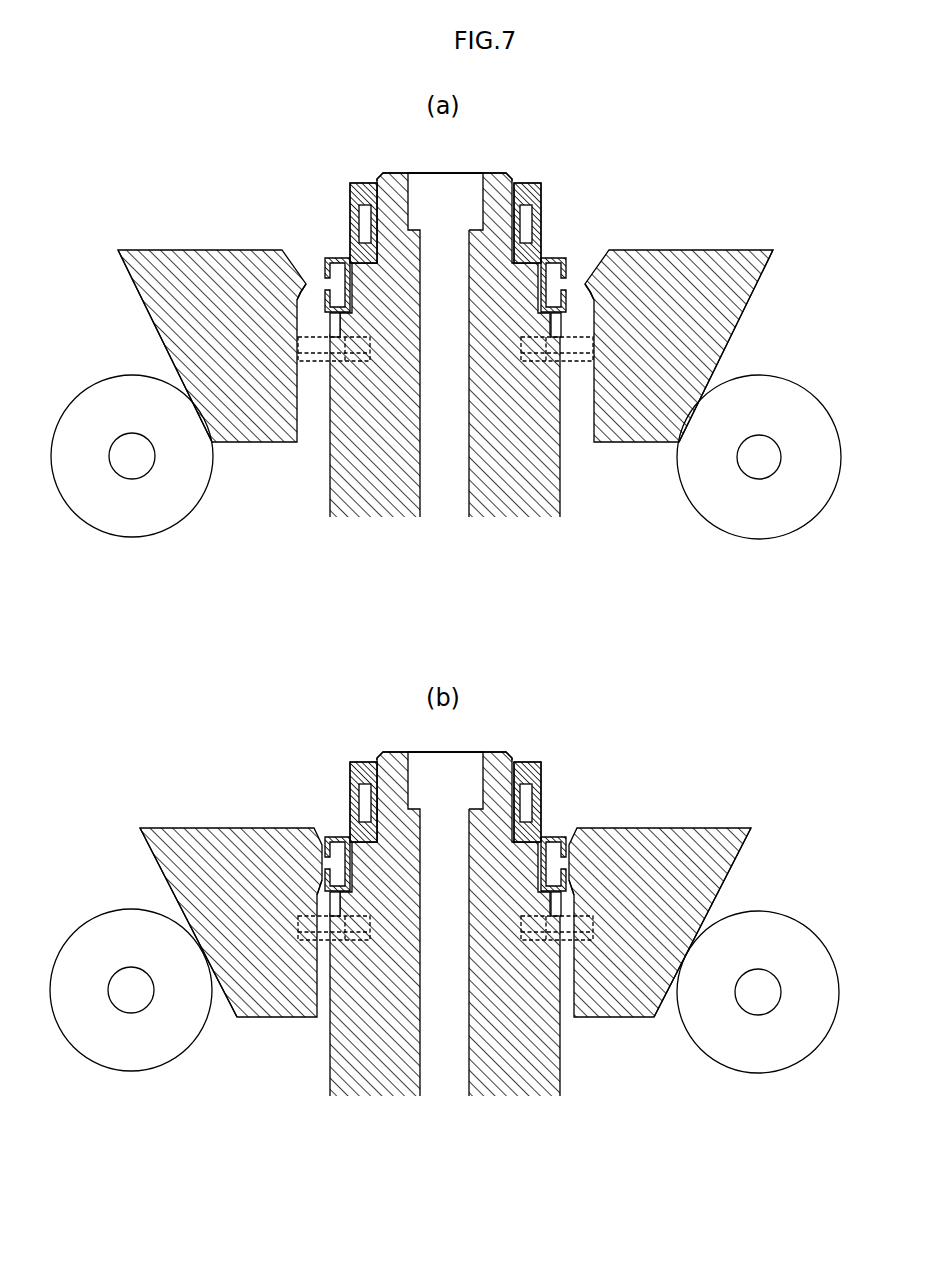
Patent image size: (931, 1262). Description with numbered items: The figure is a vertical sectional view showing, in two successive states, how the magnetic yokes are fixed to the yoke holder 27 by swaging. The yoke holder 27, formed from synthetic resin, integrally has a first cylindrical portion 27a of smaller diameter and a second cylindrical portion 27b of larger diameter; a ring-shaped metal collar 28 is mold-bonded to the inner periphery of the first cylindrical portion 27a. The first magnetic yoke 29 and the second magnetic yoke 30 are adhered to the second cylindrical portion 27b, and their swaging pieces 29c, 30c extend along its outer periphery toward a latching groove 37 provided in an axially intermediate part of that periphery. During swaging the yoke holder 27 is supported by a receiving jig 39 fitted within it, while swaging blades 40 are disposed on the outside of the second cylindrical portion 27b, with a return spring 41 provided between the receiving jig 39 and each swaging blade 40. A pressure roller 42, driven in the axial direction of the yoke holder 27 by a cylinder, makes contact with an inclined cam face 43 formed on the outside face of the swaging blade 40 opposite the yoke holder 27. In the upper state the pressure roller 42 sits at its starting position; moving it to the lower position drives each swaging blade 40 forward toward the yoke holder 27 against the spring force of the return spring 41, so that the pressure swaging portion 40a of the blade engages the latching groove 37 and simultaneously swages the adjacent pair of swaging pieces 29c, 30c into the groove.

The yoke holder 27 is at (552, 181).
The first cylindrical portion 27a is at (352, 192).
The second cylindrical portion 27b is at (543, 300).
The collar 28 is at (500, 222).
The first magnetic yoke 29 is at (330, 365).
The swaging piece 29c is at (608, 322).
The second magnetic yoke 30 is at (340, 258).
The swaging piece 30c is at (567, 276).
The latching groove 37 is at (322, 288).
The receiving jig 39 is at (393, 172).
The swaging blade 40 is at (222, 250).
The pressure swaging portion 40a is at (304, 290).
The return spring 41 is at (300, 362).
The pressure roller 42 is at (123, 527).
The inclined cam face 43 is at (143, 300).